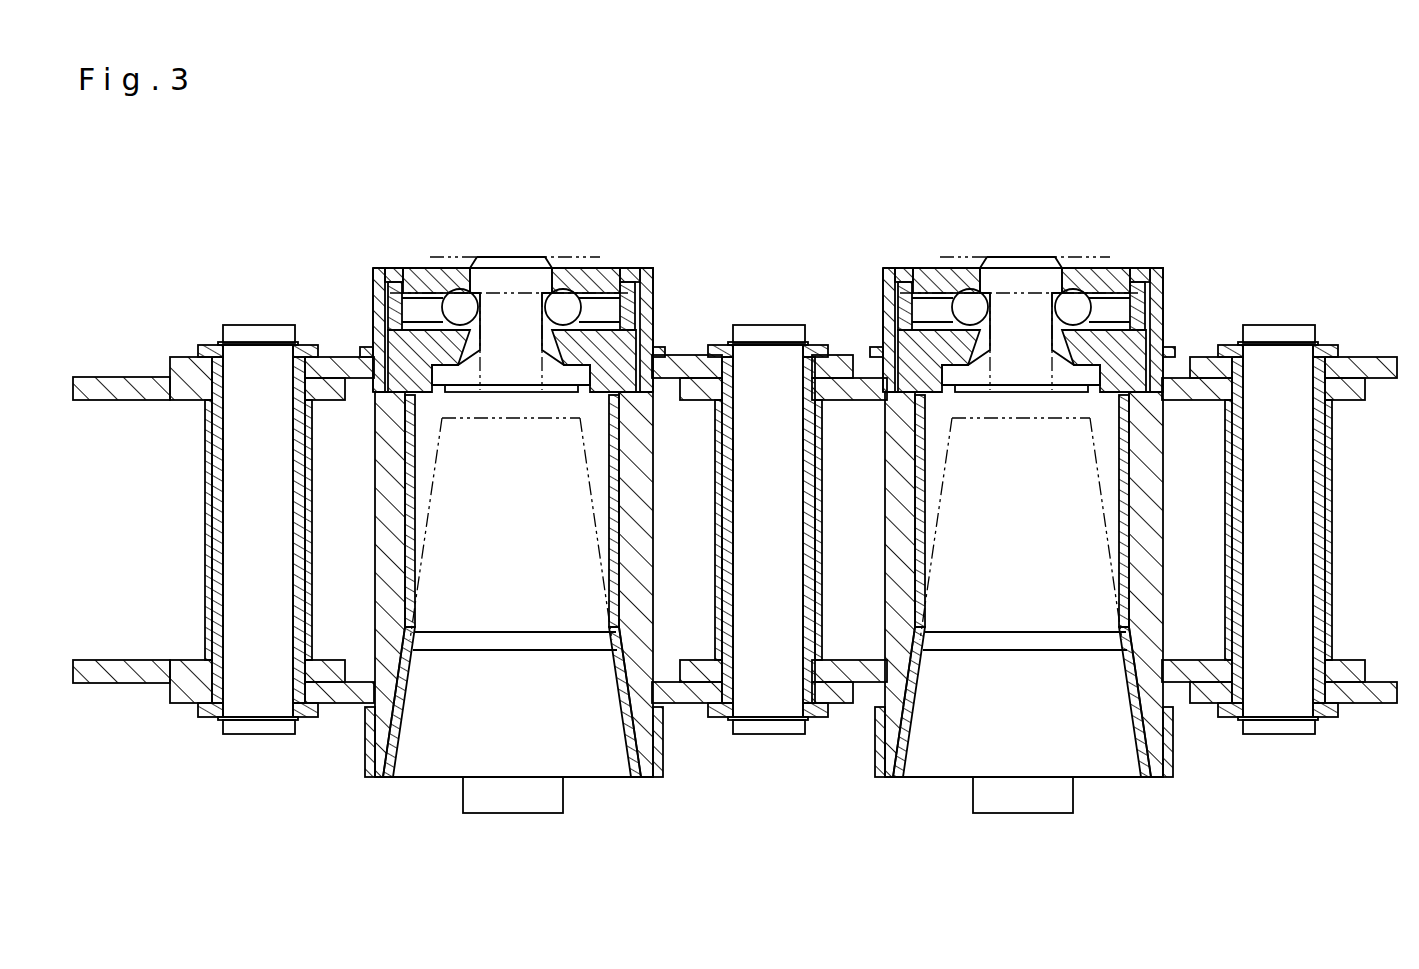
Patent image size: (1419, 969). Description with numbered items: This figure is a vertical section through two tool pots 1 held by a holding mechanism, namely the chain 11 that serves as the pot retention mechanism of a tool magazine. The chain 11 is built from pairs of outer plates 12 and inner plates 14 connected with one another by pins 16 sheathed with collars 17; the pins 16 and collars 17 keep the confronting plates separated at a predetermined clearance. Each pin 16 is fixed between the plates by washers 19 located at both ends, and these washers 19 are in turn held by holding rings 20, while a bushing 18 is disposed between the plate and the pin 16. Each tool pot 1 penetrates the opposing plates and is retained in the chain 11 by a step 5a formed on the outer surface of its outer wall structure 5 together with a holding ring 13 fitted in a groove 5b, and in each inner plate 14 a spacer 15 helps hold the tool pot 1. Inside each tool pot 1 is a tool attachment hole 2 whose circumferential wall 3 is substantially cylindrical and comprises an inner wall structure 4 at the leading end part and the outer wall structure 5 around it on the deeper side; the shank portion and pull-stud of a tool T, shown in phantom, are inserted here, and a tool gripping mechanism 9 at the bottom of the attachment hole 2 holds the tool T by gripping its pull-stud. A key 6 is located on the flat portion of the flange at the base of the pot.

The tool pot 1 is at (660, 264).
The tool attachment hole 2 is at (437, 750).
The circumferential wall 3 is at (767, 586).
The inner wall structure 4 is at (400, 705).
The outer wall structure 5 is at (406, 558).
The step 5a is at (358, 710).
The groove 5b is at (656, 350).
The key 6 is at (516, 792).
The tool gripping mechanism 9 is at (584, 270).
The chain 11 is at (121, 362).
The outer plate 12 is at (190, 357).
The holding ring 13 is at (362, 357).
The inner plate 14 is at (118, 402).
The spacer 15 is at (878, 357).
The pin 16 is at (250, 529).
The collar 17 is at (212, 452).
The bushing 18 is at (320, 660).
The washer 19 is at (305, 345).
The holding ring 20 is at (257, 325).
The tool T is at (606, 467).